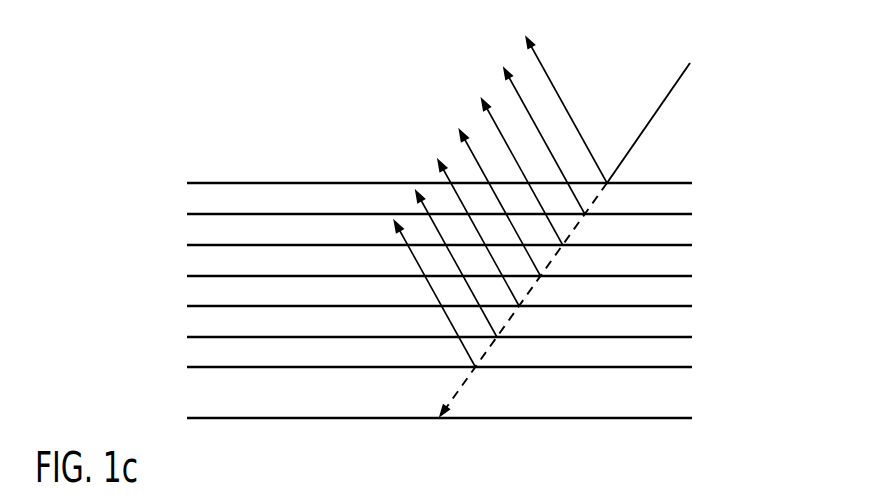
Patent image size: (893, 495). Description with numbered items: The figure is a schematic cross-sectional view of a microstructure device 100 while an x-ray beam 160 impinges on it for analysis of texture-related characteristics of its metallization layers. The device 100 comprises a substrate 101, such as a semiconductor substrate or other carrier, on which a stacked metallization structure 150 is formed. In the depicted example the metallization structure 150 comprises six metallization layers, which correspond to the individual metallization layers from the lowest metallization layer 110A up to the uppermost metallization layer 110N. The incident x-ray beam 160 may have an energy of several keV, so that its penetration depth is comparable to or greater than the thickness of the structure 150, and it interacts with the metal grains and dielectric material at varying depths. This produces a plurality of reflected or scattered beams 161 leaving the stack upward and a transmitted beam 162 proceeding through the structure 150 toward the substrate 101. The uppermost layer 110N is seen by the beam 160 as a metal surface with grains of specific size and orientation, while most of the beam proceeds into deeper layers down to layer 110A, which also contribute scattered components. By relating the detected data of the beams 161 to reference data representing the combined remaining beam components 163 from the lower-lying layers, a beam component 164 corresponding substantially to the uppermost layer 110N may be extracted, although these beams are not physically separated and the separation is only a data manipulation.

The microstructure device 100 is at (137, 78).
The substrate 101 is at (680, 398).
The uppermost metallization layer 110N is at (693, 203).
The metallization layer 110A is at (693, 360).
The stacked metallization structure 150 is at (175, 183).
The x-ray beam 160 is at (670, 98).
The reflected or scattered beams 161 is at (557, 68).
The transmitted beam 162 is at (457, 392).
The remaining beam components 163 is at (491, 189).
The beam component 164 is at (535, 59).